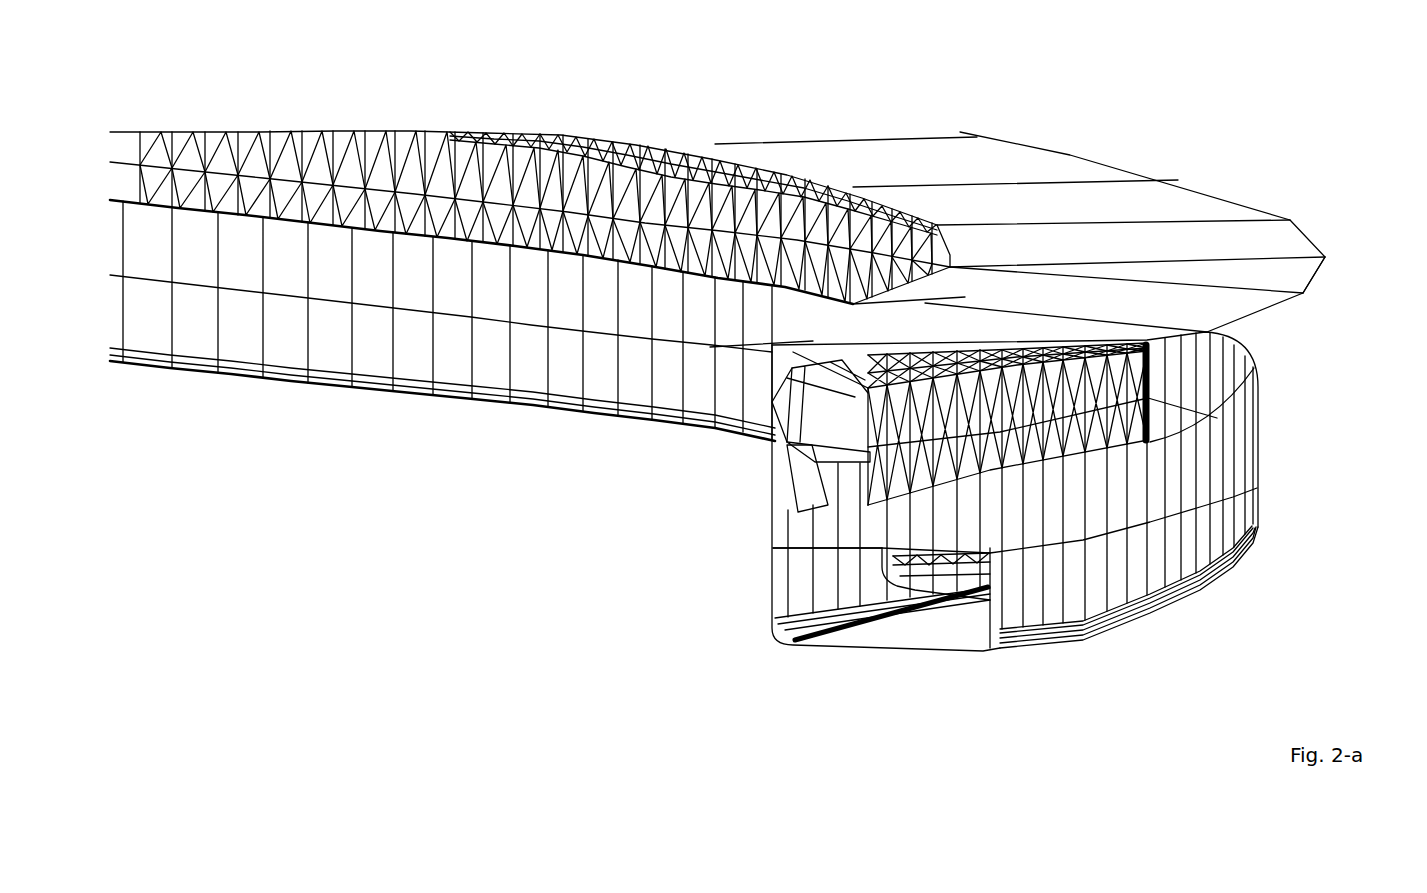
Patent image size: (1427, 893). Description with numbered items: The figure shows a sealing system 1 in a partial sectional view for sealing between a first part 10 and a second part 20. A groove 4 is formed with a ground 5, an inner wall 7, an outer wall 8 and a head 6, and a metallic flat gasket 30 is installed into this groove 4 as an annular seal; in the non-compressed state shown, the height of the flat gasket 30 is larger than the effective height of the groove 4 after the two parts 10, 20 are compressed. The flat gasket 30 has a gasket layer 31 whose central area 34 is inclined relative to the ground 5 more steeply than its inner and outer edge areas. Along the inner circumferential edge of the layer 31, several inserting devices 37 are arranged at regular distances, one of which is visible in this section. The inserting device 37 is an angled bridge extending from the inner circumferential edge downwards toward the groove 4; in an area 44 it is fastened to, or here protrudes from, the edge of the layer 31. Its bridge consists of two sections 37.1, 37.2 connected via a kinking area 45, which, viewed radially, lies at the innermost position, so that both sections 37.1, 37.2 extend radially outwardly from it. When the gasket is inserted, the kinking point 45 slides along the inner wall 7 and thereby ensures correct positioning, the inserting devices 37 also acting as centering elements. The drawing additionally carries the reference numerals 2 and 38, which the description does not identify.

The sealing system 1 is at (1057, 181).
The bearing ring 2 is at (297, 556).
The groove 4 is at (853, 597).
The ground 5 is at (902, 582).
The head 6 is at (1303, 293).
The inner wall 7 is at (785, 528).
The outer wall 8 is at (1222, 386).
The first part 10 is at (1215, 205).
The second part 20 is at (1060, 491).
The metallic flat gasket 30 is at (880, 535).
The flat gasket layer 31 is at (882, 515).
The central area 34 is at (883, 550).
The inserting device 37 is at (782, 408).
The section 37.1 is at (767, 445).
The section 37.2 is at (775, 475).
The opening 38 is at (937, 587).
The area 44 is at (808, 343).
The kinking area 45 is at (770, 448).